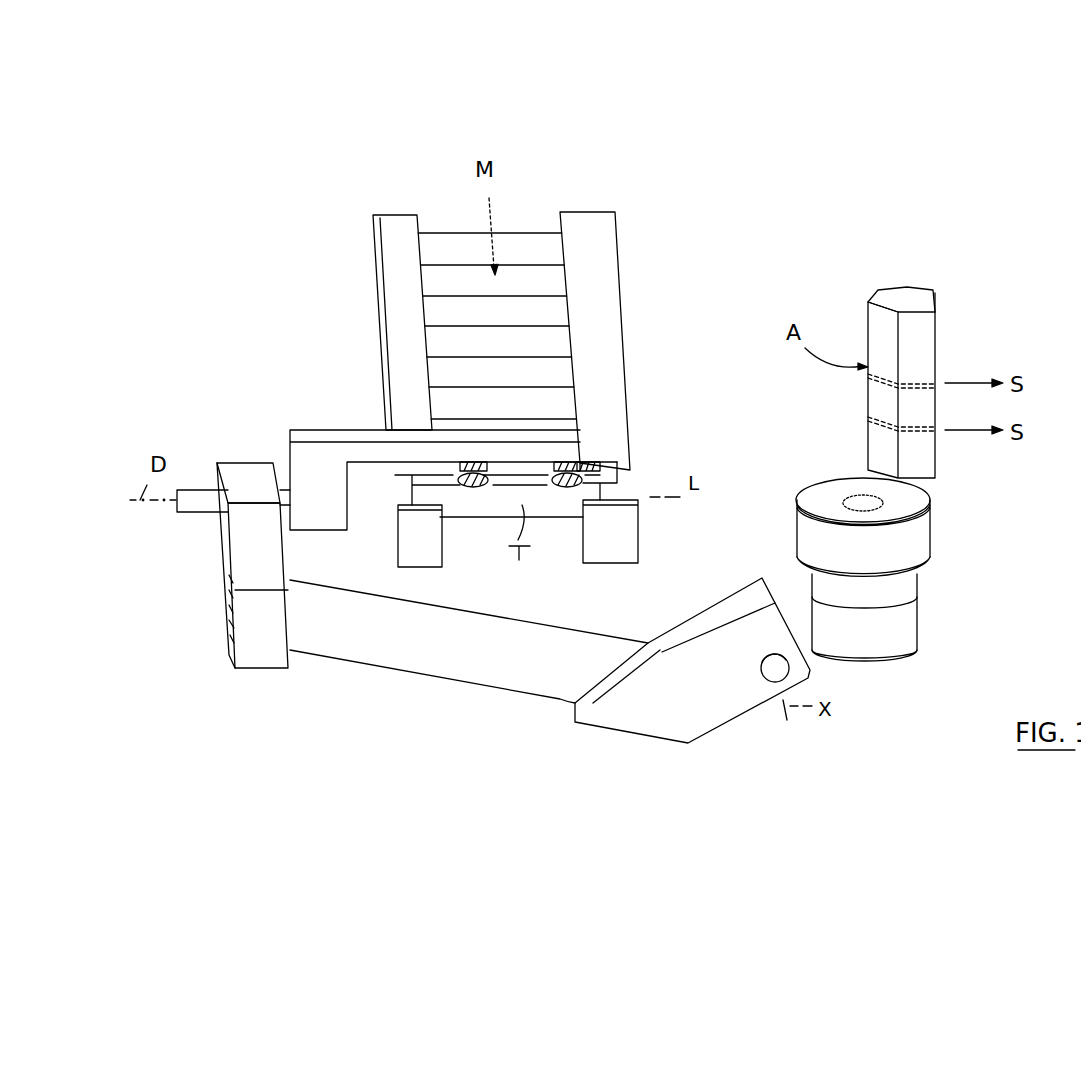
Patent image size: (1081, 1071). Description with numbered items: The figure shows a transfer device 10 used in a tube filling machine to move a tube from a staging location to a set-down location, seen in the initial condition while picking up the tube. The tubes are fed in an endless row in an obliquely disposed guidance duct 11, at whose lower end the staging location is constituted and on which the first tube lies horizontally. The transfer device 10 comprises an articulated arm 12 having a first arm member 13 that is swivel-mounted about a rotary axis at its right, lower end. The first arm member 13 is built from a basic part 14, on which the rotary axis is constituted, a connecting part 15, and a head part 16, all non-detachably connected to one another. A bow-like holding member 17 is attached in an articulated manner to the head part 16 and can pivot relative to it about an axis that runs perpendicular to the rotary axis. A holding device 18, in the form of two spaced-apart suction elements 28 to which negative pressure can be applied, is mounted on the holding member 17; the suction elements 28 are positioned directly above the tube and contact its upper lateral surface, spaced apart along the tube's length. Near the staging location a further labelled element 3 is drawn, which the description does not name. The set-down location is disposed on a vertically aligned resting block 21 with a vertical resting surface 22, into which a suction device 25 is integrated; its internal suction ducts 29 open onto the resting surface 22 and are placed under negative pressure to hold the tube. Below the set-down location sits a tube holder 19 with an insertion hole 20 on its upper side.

The transfer device 10 is at (740, 110).
The guidance duct 11 is at (616, 288).
The articulated arm 12 is at (426, 727).
The first arm member 13 is at (510, 695).
The basic part 14 is at (710, 715).
The connecting part 15 is at (522, 636).
The head part 16 is at (255, 658).
The holding member 17 is at (320, 458).
The holding device 18 is at (587, 460).
The tube holder 19 is at (920, 551).
The insertion hole 20 is at (862, 495).
The resting block 21 is at (933, 463).
The resting surface 22 is at (878, 300).
The suction device 25 is at (921, 375).
The suction elements 28 is at (476, 498).
The suction ducts 29 is at (913, 423).
The step 3 is at (627, 478).